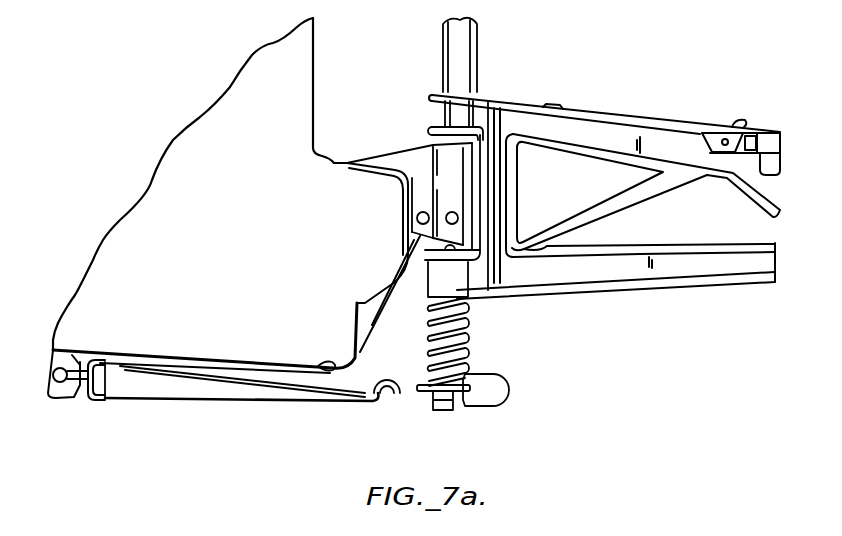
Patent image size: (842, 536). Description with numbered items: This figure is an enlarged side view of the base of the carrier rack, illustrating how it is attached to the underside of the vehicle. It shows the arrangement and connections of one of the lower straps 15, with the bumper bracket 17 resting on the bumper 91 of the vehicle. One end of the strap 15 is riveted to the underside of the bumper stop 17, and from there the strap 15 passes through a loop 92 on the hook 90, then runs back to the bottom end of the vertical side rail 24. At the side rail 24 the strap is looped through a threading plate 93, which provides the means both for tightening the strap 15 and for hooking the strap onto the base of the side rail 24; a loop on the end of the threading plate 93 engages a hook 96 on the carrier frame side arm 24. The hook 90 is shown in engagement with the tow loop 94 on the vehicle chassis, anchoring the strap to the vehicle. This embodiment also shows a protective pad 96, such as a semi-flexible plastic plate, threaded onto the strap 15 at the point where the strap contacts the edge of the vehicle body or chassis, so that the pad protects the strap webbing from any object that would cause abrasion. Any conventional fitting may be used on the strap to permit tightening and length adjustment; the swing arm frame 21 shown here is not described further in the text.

The lower strap 15 is at (242, 402).
The bumper bracket 17 is at (407, 143).
The swing arm frame 21 is at (612, 120).
The vertical side rail 24 is at (479, 55).
The hook 90 is at (77, 394).
The bumper 91 is at (392, 234).
The loop 92 is at (102, 401).
The threading plate 93 is at (408, 398).
The tow loop 94 is at (52, 396).
The hook / protective pad 96 is at (332, 362).